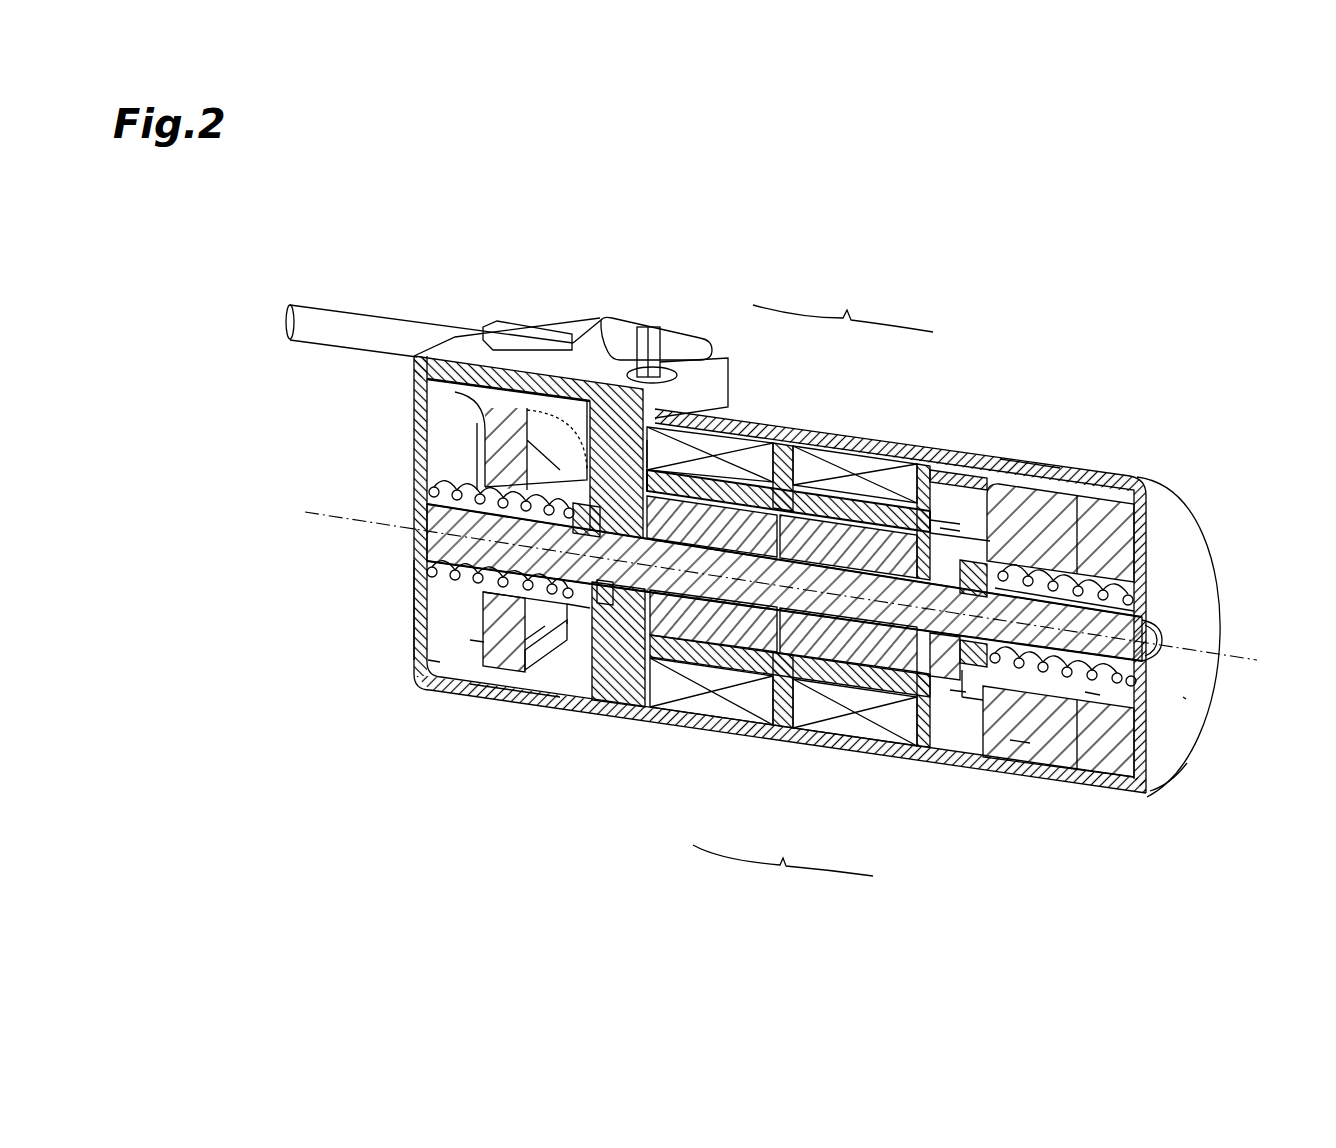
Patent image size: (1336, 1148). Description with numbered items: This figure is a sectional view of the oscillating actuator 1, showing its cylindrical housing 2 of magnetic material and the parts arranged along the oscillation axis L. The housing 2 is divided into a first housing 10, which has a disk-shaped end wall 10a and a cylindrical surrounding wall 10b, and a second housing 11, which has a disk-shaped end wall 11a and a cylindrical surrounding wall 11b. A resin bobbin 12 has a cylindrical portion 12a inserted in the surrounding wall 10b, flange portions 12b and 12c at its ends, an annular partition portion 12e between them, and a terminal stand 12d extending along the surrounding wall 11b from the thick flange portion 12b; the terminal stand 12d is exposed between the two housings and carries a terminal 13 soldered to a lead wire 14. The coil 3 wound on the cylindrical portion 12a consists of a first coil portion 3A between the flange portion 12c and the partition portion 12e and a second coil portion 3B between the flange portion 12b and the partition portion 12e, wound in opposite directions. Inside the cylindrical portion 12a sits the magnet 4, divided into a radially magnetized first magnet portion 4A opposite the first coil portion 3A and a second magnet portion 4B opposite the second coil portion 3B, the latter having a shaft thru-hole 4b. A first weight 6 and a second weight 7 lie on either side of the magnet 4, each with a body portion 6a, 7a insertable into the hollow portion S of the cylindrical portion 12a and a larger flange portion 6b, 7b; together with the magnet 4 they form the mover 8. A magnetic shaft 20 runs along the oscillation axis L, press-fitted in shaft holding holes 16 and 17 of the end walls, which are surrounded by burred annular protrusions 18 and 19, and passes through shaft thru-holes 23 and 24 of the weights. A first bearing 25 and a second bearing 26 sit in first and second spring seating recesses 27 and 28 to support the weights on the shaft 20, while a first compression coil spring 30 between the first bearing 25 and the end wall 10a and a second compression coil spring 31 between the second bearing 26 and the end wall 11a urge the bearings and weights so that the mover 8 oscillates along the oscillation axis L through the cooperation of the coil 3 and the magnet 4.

The oscillating actuator 1 is at (457, 221).
The housing 2 is at (1103, 404).
The coil 3 is at (783, 875).
The first coil portion 3A is at (841, 728).
The second coil portion 3B is at (716, 718).
The magnet 4 is at (843, 306).
The first magnet portion 4A is at (866, 514).
The second magnet portion 4B is at (738, 490).
The shaft thru-hole 4b is at (692, 706).
The first weight 6 is at (1120, 743).
The body portion 6a is at (958, 692).
The flange portion 6b is at (1018, 741).
The second weight 7 is at (470, 444).
The body portion 7a is at (567, 604).
The flange portion 7b is at (503, 672).
The mover 8 is at (960, 518).
The first housing 10 is at (1223, 527).
The end wall 10a is at (1184, 697).
The surrounding wall 10b is at (1046, 478).
The second housing 11 is at (411, 641).
The end wall 11a is at (413, 613).
The surrounding wall 11b is at (505, 698).
The bobbin 12 is at (938, 485).
The cylindrical portion 12a is at (833, 487).
The flange portion 12b is at (635, 640).
The flange portion 12c is at (922, 732).
The terminal stand 12d is at (515, 358).
The partition portion 12e is at (786, 726).
The terminal 13 is at (650, 326).
The lead wire 14 is at (345, 332).
The shaft holding hole 16 is at (1160, 632).
The shaft holding hole 17 is at (420, 518).
The annular protrusion 18 is at (1110, 592).
The annular protrusion 19 is at (413, 568).
The shaft 20 is at (600, 640).
The shaft thru-hole 23 is at (980, 560).
The shaft thru-hole 24 is at (615, 640).
The first bearing 25 is at (983, 670).
The second bearing 26 is at (575, 622).
The first spring seating recess 27 is at (1040, 690).
The second spring seating recess 28 is at (478, 660).
The first compression coil spring 30 is at (1090, 697).
The second compression coil spring 31 is at (436, 670).
The hollow portion S is at (953, 528).
The oscillation axis L is at (1238, 652).